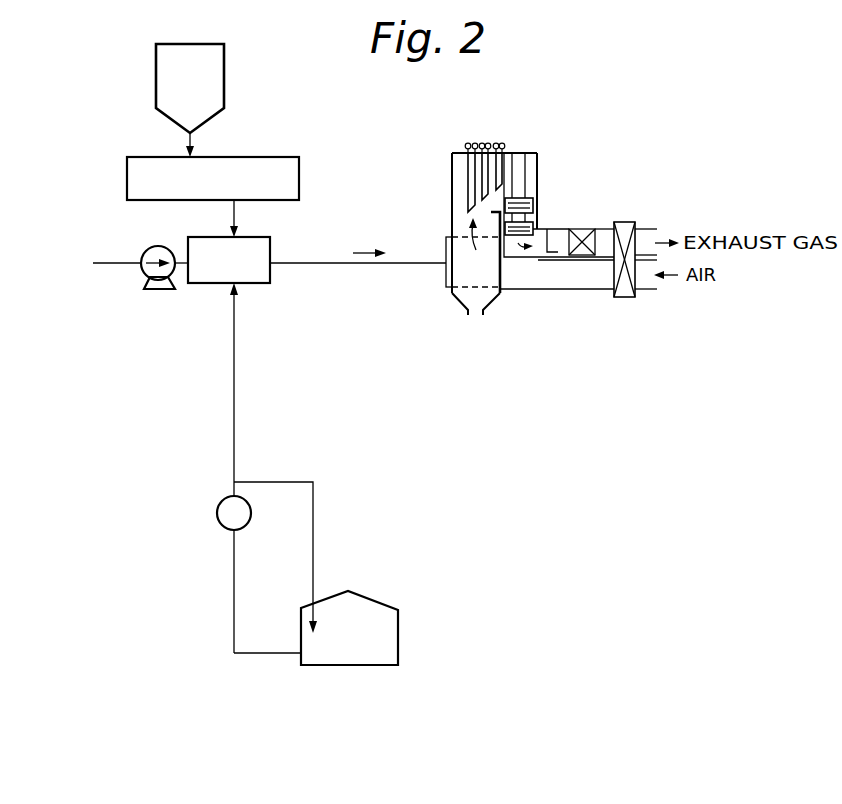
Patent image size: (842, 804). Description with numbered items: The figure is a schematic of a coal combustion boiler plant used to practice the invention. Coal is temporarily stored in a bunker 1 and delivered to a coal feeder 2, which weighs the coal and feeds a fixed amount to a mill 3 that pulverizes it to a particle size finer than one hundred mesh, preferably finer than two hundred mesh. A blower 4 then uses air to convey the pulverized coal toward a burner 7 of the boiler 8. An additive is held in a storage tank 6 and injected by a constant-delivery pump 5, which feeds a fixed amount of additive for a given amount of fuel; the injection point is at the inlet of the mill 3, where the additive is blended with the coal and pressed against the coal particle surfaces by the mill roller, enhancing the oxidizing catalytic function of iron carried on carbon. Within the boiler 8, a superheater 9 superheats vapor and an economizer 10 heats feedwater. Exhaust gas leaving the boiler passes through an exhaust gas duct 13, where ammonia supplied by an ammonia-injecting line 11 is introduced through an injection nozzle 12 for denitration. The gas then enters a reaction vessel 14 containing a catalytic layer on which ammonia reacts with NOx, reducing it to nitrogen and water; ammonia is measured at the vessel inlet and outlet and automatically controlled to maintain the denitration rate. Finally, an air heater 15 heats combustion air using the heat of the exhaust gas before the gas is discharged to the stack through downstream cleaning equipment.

The bunker 1 is at (224, 56).
The coal feeder 2 is at (299, 165).
The mill 3 is at (270, 246).
The blower 4 is at (146, 250).
The pump 5 is at (217, 509).
The storage tank 6 is at (363, 603).
The burner 7 is at (468, 268).
The boiler 8 is at (458, 162).
The superheater 9 is at (488, 178).
The economizer 10 is at (543, 225).
The ammonia-injecting line 11 is at (558, 238).
The injection nozzle 12 is at (553, 257).
The exhaust gas duct 13 is at (590, 230).
The reaction vessel 14 is at (597, 233).
The air heater 15 is at (633, 223).